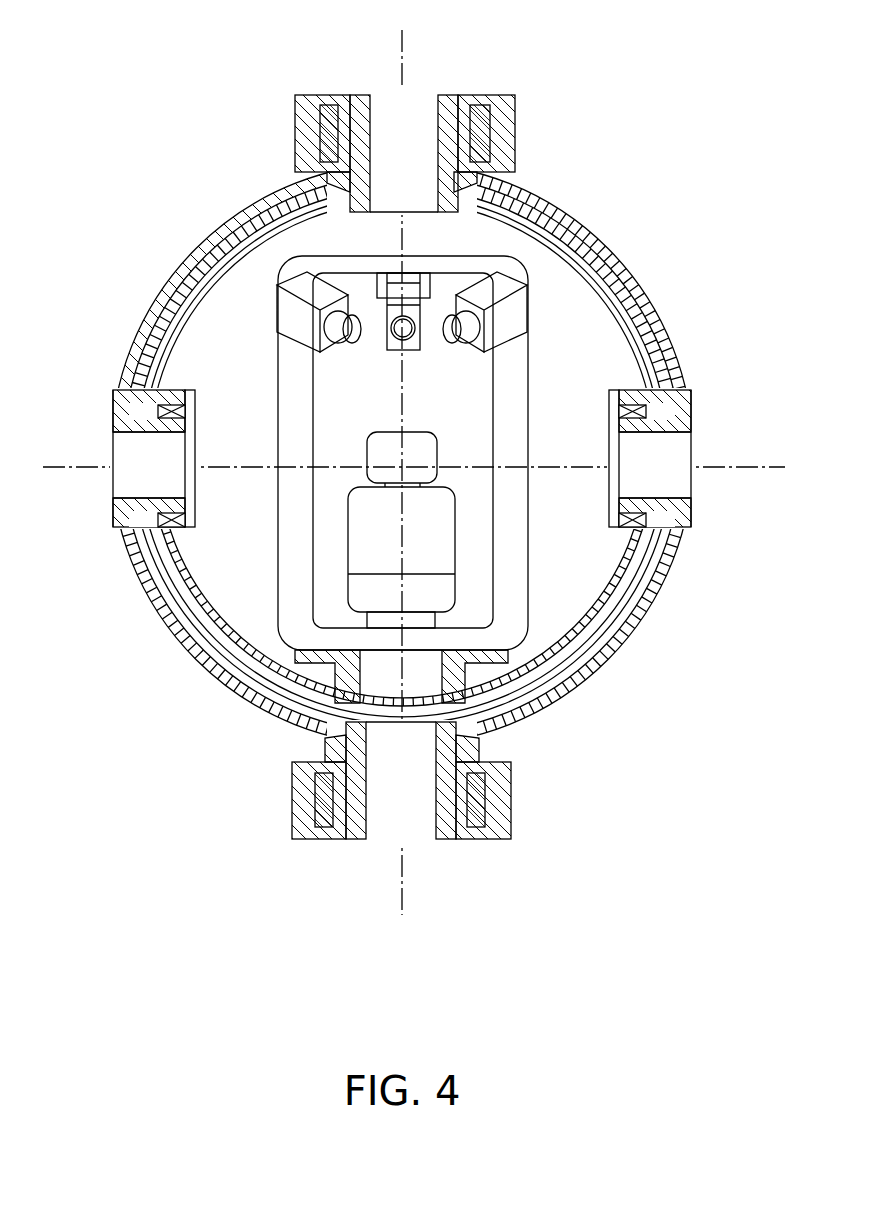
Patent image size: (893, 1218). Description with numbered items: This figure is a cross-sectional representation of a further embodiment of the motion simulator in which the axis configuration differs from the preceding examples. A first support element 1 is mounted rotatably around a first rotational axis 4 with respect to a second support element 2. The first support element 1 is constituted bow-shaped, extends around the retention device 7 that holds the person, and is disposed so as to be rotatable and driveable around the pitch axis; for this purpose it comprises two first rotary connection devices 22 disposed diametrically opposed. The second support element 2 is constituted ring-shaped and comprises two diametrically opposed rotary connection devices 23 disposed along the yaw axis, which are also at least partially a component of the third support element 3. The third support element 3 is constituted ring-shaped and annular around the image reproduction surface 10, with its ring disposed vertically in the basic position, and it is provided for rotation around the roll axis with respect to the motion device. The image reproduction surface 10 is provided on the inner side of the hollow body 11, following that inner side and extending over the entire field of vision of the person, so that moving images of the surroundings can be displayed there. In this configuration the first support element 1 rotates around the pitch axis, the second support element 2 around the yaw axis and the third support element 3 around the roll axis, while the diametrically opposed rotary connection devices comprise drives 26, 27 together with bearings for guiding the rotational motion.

The first support element 1 is at (665, 398).
The second support element 2 is at (556, 230).
The third support element 3 is at (515, 140).
The first rotational axis 4 is at (757, 467).
The retention device 7 is at (367, 588).
The image reproduction surface 10 is at (623, 323).
The hollow body 11 is at (611, 270).
The first rotary connection devices 22 is at (675, 422).
The rotary connection devices 23 is at (330, 108).
The drive 26 is at (158, 407).
The drive 27 is at (480, 108).